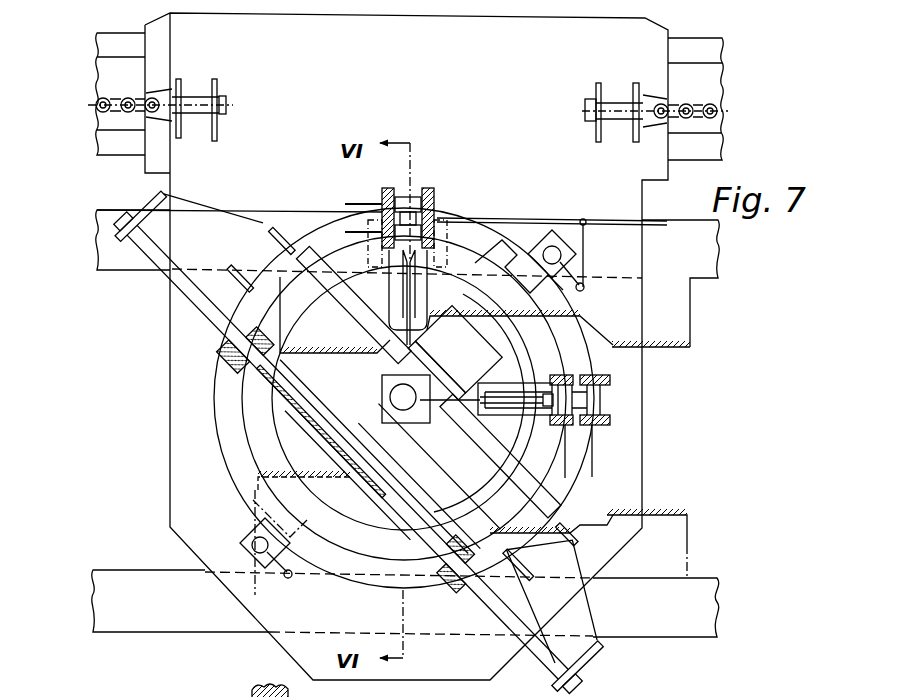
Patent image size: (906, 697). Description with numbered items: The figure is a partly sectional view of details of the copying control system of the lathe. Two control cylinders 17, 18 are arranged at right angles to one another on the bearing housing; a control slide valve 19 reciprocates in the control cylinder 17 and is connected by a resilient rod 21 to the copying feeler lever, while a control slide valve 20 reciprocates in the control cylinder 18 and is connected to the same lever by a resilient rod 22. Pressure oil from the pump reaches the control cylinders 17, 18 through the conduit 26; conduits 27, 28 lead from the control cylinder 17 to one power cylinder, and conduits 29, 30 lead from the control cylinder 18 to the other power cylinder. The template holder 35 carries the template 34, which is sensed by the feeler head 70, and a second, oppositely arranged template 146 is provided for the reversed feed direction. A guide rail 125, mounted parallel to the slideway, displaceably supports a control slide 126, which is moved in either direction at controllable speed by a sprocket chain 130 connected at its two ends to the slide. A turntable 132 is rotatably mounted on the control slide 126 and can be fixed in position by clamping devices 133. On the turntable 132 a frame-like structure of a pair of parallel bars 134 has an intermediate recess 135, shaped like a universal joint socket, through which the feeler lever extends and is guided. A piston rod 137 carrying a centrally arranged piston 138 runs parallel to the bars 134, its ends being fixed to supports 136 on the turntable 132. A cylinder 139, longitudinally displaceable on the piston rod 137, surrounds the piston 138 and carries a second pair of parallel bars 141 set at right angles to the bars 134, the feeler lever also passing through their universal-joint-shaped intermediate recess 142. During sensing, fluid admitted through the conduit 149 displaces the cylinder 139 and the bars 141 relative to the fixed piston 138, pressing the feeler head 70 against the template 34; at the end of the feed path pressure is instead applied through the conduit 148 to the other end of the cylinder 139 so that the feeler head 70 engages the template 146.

The control cylinder 17 is at (608, 386).
The control cylinder 18 is at (435, 188).
The control slide valve 19 is at (604, 400).
The control slide valve 20 is at (411, 196).
The resilient rod 21 is at (527, 408).
The resilient rod 22 is at (402, 293).
The conduit 26 is at (492, 217).
The conduit 27 is at (595, 453).
The conduit 28 is at (568, 471).
The conduit 29 is at (354, 203).
The conduit 30 is at (353, 230).
The template 34 is at (669, 350).
The template holder 35 is at (702, 283).
The feeler head 70 is at (428, 443).
The guide rail 125 is at (112, 32).
The control slide 126 is at (168, 457).
The sprocket chain 130 is at (128, 117).
The turntable 132 is at (214, 414).
The clamping devices 133 is at (552, 243).
The parallel bars 134 is at (364, 320).
The intermediate recess 135 is at (507, 483).
The supports 136 is at (594, 618).
The piston rod 137 is at (164, 276).
The piston 138 is at (347, 456).
The cylinder 139 is at (293, 425).
The second pair of parallel bars 141 is at (414, 360).
The intermediate recess 142 is at (458, 318).
The template 146 is at (668, 512).
The conduit 148 is at (412, 598).
The conduit 149 is at (222, 370).